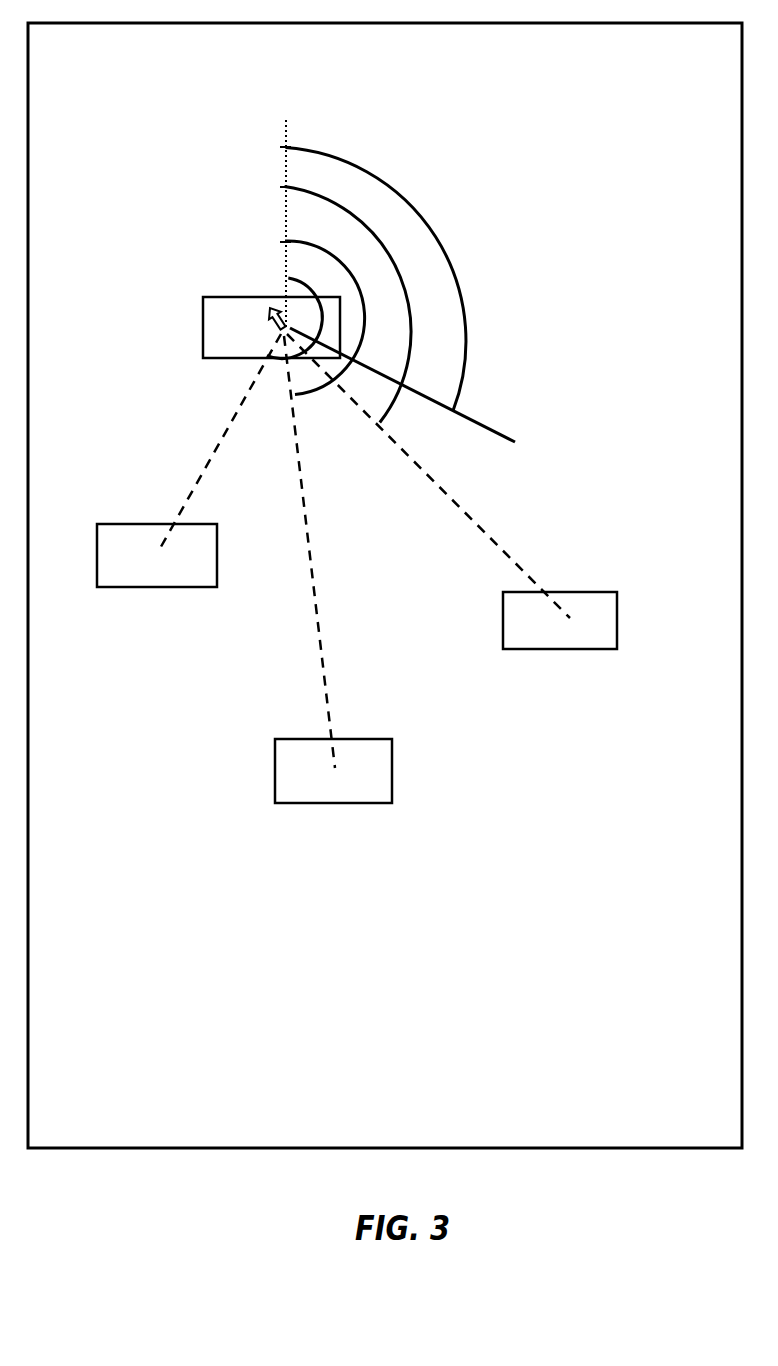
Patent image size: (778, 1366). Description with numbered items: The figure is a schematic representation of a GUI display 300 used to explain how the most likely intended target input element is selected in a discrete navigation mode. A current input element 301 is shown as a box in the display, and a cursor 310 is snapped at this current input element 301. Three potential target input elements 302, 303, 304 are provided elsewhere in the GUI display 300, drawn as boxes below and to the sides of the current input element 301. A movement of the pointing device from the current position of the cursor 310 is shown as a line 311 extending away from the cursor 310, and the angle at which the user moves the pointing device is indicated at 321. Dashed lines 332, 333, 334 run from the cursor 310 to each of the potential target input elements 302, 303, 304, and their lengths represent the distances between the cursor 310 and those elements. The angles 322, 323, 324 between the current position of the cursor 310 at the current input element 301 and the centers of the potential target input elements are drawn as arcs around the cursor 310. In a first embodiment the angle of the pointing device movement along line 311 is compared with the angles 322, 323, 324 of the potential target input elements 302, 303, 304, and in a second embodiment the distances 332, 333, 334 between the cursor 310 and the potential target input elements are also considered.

The GUI display 300 is at (213, 53).
The current input element 301 is at (247, 338).
The potential target input element 302 is at (146, 565).
The potential target input element 303 is at (324, 783).
The potential target input element 304 is at (552, 631).
The cursor 310 is at (278, 305).
The line 311 is at (482, 423).
The angle of pointing device movement 321 is at (417, 173).
The angle 322 is at (385, 245).
The angle 323 is at (360, 287).
The angle 324 is at (322, 327).
The distance line 332 is at (203, 472).
The distance line 333 is at (323, 680).
The distance line 334 is at (510, 560).